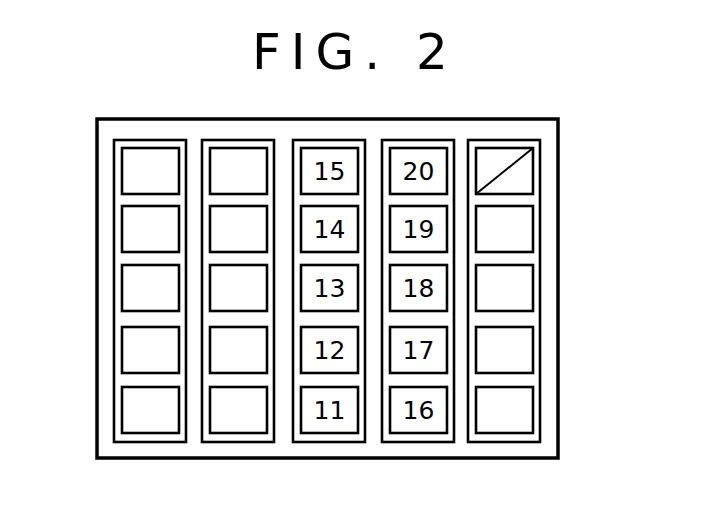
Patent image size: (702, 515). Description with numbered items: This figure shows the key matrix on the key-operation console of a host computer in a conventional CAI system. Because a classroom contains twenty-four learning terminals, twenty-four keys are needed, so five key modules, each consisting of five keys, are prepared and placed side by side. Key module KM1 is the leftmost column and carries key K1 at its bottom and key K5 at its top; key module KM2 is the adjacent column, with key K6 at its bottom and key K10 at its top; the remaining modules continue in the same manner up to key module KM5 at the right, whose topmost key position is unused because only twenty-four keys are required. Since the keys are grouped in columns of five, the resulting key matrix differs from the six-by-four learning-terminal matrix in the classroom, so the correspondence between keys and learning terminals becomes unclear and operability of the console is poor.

The key K1 is at (130, 405).
The key K5 is at (130, 173).
The key K6 is at (259, 424).
The key K10 is at (224, 152).
The key module KM1 is at (116, 262).
The key module KM2 is at (203, 442).
The key module KM5 is at (539, 385).